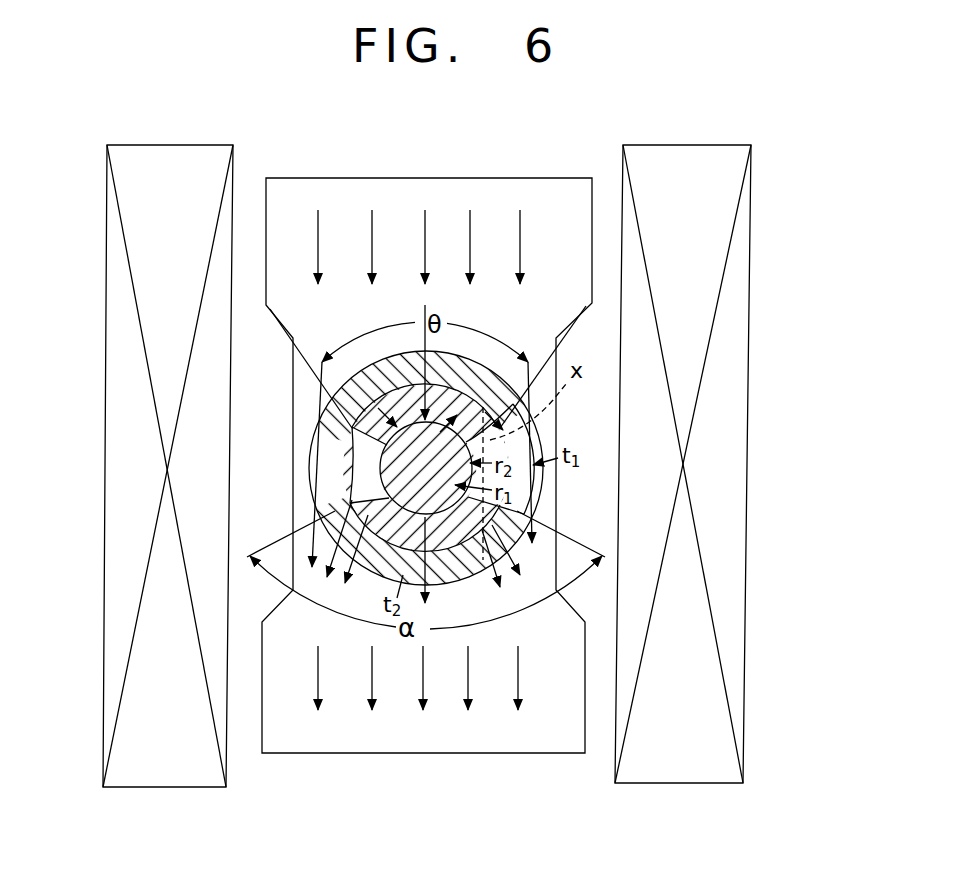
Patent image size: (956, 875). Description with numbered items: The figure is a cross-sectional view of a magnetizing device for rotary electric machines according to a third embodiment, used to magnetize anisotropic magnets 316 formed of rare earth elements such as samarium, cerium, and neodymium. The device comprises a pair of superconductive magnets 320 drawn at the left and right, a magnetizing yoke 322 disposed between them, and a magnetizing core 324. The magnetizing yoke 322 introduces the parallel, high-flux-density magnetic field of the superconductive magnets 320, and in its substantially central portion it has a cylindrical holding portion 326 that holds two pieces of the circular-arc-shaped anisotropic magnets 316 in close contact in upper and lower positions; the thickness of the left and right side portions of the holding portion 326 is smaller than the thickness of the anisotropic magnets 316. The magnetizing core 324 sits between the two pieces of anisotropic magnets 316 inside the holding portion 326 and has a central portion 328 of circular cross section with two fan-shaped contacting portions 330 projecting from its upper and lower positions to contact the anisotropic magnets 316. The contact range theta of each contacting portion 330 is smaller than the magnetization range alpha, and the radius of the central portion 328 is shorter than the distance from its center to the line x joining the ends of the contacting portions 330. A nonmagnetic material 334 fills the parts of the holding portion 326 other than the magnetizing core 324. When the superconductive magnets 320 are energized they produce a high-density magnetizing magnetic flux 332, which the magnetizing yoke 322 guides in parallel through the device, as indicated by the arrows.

The anisotropic magnets 316 is at (395, 374).
The superconductive magnets 320 is at (133, 220).
The magnetizing yoke 322 is at (272, 258).
The magnetizing core 324 is at (390, 498).
The holding portion 326 is at (540, 488).
The central portion 328 is at (335, 463).
The contacting portions 330 is at (420, 385).
The magnetizing magnetic flux 332 is at (425, 222).
The nonmagnetic material 334 is at (320, 432).